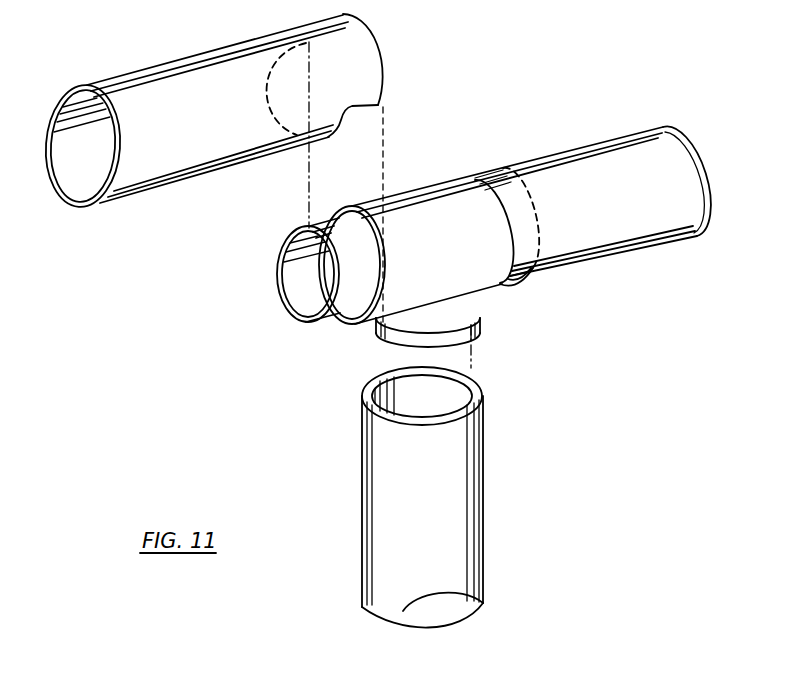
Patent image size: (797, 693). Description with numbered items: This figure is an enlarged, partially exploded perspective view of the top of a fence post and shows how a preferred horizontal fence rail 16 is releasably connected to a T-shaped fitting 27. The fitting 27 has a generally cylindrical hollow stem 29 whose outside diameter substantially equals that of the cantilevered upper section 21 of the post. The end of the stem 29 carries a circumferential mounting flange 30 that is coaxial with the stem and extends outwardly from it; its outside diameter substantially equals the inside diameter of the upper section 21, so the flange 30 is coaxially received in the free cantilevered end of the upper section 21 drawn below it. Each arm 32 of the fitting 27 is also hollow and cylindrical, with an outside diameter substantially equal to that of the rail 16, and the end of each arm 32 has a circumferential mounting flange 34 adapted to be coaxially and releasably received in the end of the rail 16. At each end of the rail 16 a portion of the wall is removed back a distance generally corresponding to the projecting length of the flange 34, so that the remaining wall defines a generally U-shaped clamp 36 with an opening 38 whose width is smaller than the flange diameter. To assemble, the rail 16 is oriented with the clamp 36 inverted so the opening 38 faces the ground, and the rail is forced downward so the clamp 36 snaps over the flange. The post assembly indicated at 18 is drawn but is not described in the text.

The horizontal fence rail 16 is at (167, 62).
The leg assembly 18 is at (529, 539).
The cantilevered upper section 21 is at (463, 467).
The T-shaped fitting 27 is at (536, 103).
The stem 29 is at (382, 325).
The circumferential mounting flange 30 is at (474, 324).
The arm 32 is at (352, 323).
The circumferential mounting flange 34 is at (310, 322).
The U-shaped clamp 36 is at (377, 50).
The opening 38 is at (350, 112).